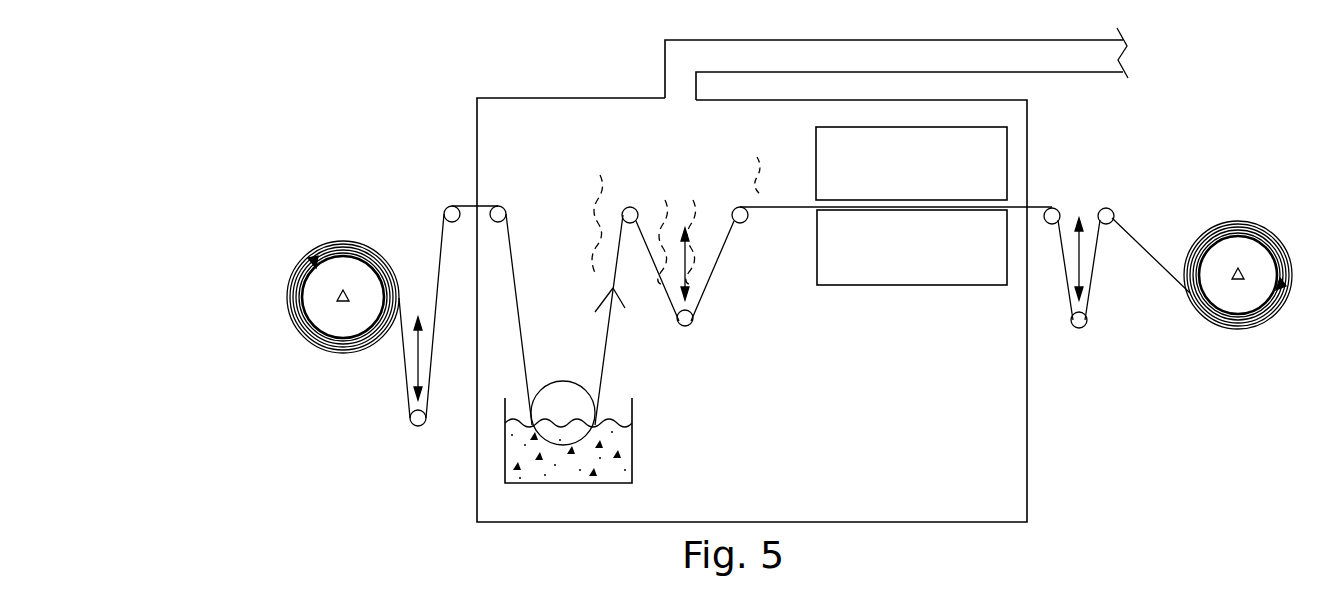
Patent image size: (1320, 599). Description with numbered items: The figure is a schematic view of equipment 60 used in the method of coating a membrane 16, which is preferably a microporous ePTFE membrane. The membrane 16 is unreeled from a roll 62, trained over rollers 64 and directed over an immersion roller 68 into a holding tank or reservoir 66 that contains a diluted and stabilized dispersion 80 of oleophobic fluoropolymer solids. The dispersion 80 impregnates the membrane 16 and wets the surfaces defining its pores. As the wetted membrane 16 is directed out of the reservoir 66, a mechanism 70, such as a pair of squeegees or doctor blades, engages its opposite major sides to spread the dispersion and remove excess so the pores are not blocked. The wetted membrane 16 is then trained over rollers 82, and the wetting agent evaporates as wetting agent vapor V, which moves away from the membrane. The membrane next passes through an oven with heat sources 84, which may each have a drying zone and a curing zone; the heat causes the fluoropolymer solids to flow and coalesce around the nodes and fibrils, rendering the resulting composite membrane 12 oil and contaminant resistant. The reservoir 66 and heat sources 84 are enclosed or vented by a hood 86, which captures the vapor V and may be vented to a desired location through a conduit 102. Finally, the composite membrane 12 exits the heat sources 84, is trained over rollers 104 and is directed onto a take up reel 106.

The equipment 60 is at (450, 118).
The hood 86 is at (548, 98).
The conduit 102 is at (1033, 72).
The heat sources 84 is at (816, 153).
The roll 62 is at (363, 345).
The membrane 16 is at (434, 258).
The rollers 64 is at (452, 206).
The wetting agent vapor V is at (600, 220).
The mechanism 70 is at (598, 300).
The immersion roller 68 is at (570, 398).
The reservoir 66 is at (633, 412).
The diluted and stabilized dispersion 80 is at (618, 465).
The rollers 82 is at (737, 207).
The rollers 104 is at (1103, 208).
The composite membrane 12 is at (1135, 233).
The take up reel 106 is at (1245, 330).